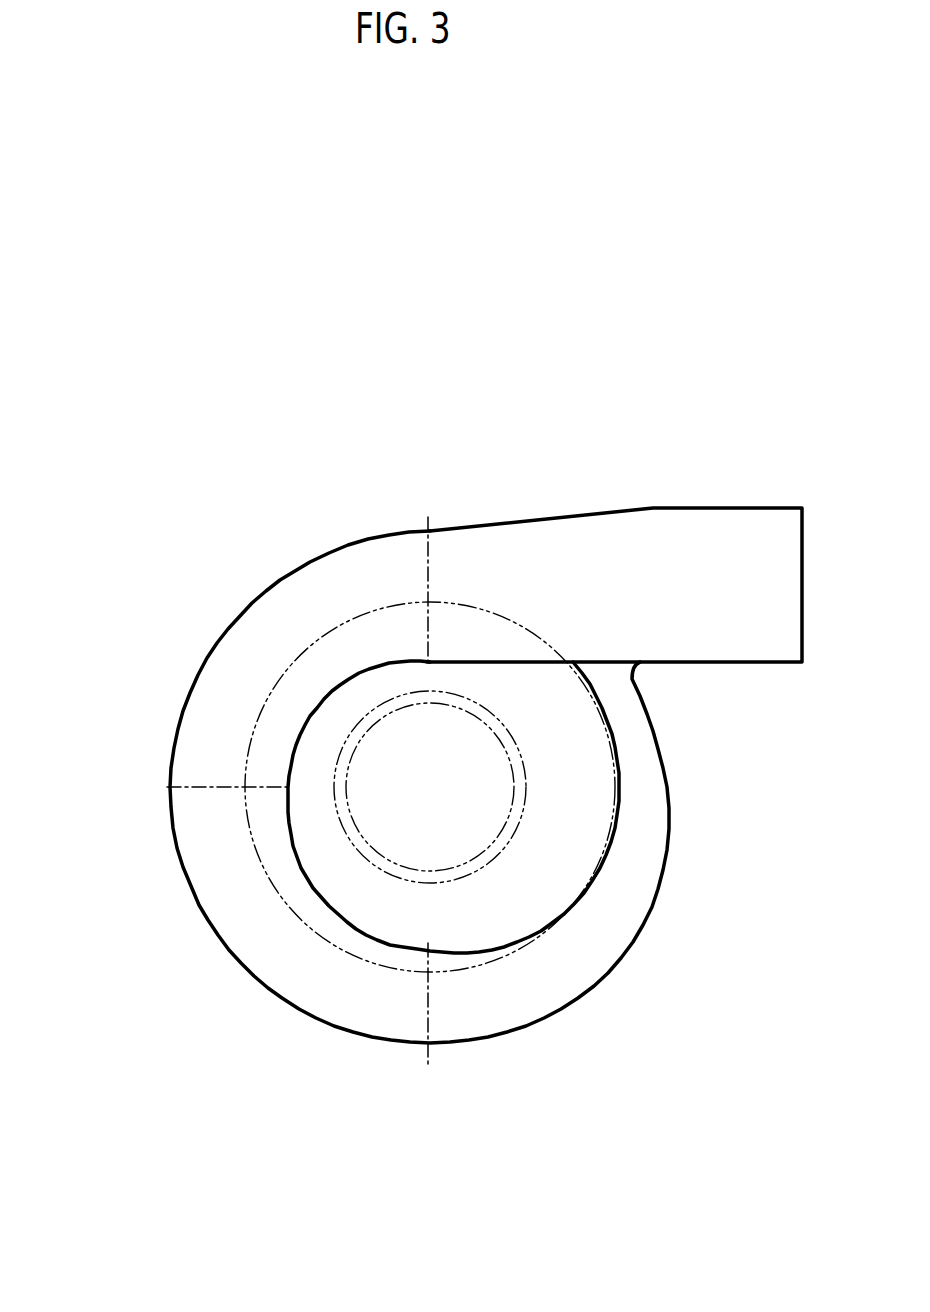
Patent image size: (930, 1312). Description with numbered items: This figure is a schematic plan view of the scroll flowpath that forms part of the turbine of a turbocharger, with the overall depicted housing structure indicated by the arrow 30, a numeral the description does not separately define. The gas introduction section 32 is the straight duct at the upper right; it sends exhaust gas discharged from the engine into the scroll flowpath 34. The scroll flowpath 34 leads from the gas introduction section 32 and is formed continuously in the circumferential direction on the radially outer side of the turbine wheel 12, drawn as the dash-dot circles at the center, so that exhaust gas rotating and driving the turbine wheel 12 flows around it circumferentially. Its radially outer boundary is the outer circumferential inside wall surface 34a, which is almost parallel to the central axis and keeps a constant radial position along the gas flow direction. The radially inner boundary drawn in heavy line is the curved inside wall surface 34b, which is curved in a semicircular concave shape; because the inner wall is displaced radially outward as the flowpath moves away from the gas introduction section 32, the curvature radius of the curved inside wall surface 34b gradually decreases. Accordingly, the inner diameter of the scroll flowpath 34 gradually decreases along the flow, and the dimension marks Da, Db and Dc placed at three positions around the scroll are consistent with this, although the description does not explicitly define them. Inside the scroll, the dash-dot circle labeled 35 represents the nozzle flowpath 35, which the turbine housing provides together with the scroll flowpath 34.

The compressor housing 30 is at (753, 484).
The gas introduction section 32 is at (653, 508).
The scroll flowpath 34 is at (215, 643).
The outer circumferential inside wall surface 34a is at (176, 720).
The curved inside wall surface 34b is at (290, 850).
The nozzle flowpath 35 is at (552, 928).
The turbine wheel 12 is at (520, 795).
The diameter at top position Da is at (425, 527).
The diameter at left position Db is at (167, 787).
The diameter at bottom position Dc is at (425, 1058).